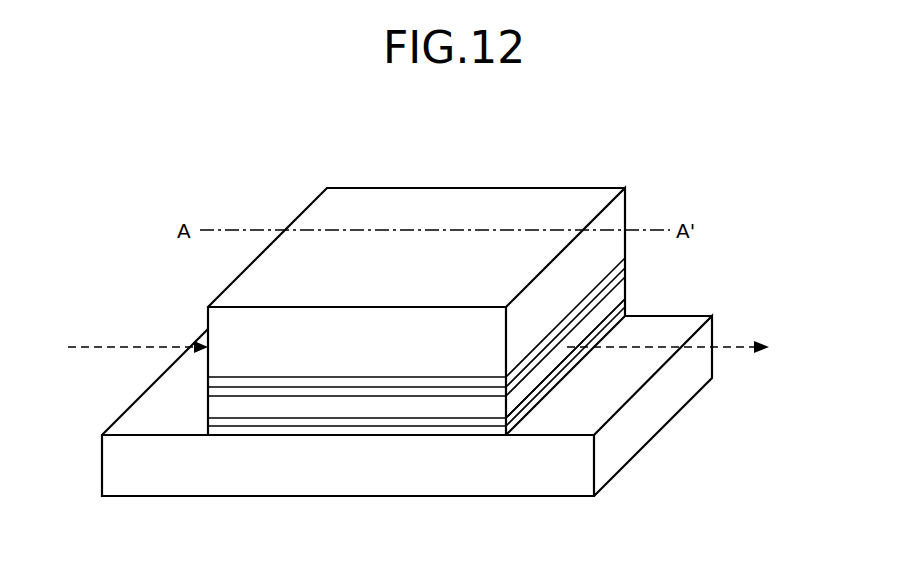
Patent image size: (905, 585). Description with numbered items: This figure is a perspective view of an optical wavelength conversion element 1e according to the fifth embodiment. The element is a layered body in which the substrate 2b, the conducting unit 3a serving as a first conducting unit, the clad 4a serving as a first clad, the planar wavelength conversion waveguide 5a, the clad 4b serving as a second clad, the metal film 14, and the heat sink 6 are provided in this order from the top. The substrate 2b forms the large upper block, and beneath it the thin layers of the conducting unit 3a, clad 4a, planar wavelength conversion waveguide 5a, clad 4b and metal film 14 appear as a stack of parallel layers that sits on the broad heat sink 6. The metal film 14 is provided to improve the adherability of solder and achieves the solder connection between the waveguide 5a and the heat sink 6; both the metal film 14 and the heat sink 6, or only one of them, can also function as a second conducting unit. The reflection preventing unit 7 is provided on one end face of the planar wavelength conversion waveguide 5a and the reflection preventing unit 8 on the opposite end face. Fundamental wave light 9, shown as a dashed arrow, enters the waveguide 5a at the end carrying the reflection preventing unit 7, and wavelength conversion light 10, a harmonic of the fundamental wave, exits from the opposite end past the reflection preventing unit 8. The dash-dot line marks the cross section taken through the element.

The optical wavelength conversion element 1e is at (540, 192).
The substrate 2b is at (399, 208).
The conducting unit 3a is at (588, 300).
The clad 4a is at (235, 390).
The planar wavelength conversion waveguide 5a is at (323, 407).
The clad 4b is at (403, 420).
The metal film 14 is at (467, 428).
The reflection preventing unit 7 is at (207, 407).
The reflection preventing unit 8 is at (585, 330).
The heat sink 6 is at (622, 448).
The fundamental wave light 9 is at (84, 345).
The wavelength conversion light 10 is at (733, 349).